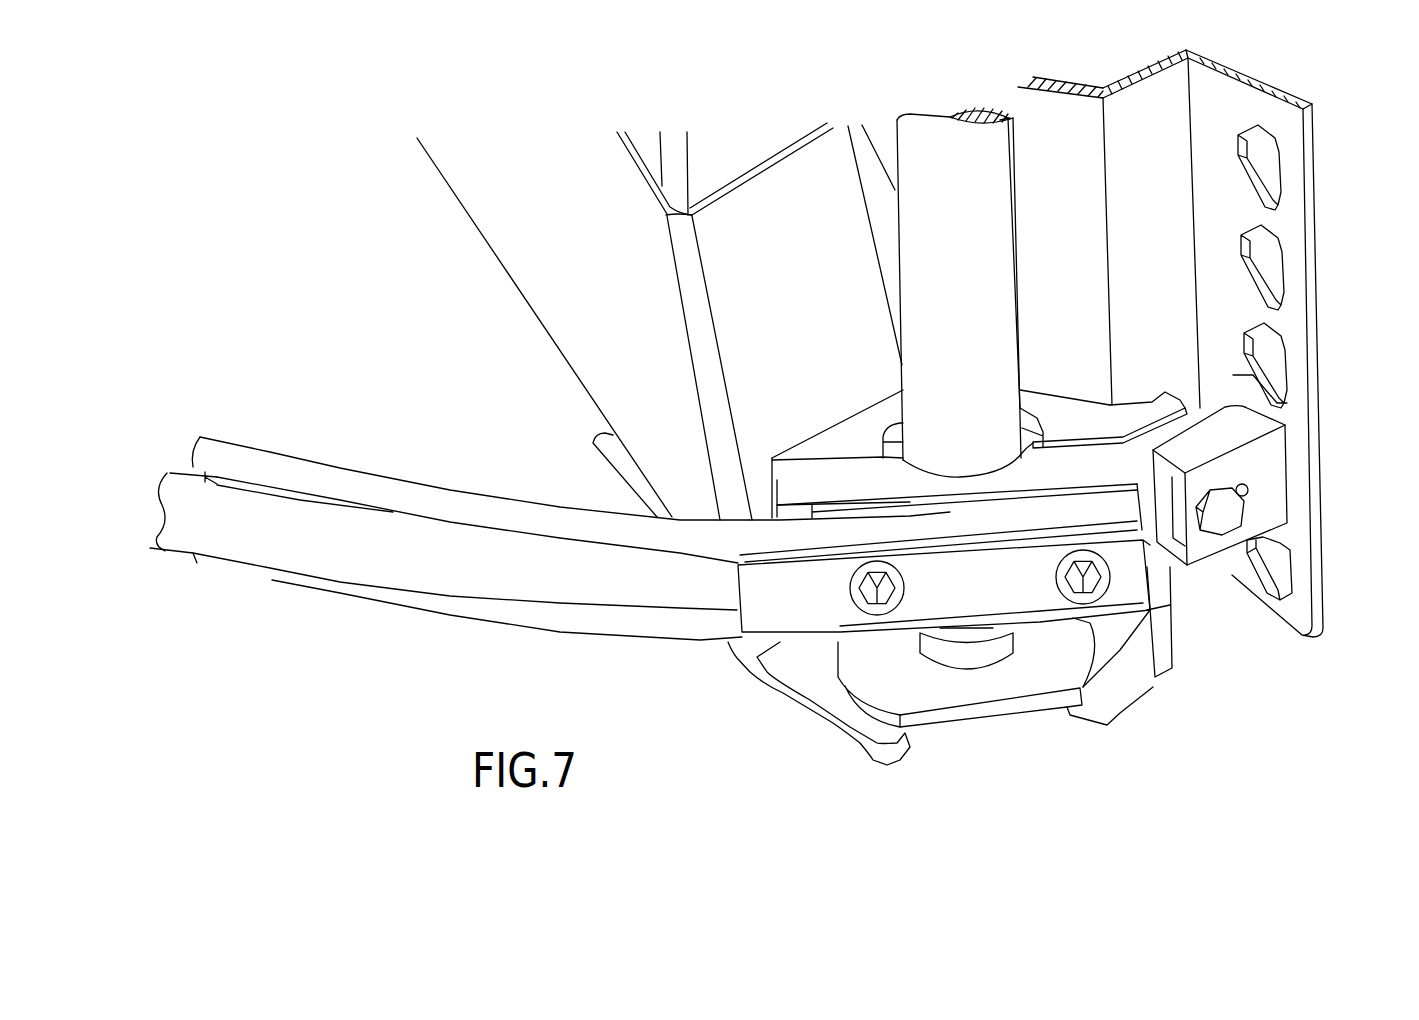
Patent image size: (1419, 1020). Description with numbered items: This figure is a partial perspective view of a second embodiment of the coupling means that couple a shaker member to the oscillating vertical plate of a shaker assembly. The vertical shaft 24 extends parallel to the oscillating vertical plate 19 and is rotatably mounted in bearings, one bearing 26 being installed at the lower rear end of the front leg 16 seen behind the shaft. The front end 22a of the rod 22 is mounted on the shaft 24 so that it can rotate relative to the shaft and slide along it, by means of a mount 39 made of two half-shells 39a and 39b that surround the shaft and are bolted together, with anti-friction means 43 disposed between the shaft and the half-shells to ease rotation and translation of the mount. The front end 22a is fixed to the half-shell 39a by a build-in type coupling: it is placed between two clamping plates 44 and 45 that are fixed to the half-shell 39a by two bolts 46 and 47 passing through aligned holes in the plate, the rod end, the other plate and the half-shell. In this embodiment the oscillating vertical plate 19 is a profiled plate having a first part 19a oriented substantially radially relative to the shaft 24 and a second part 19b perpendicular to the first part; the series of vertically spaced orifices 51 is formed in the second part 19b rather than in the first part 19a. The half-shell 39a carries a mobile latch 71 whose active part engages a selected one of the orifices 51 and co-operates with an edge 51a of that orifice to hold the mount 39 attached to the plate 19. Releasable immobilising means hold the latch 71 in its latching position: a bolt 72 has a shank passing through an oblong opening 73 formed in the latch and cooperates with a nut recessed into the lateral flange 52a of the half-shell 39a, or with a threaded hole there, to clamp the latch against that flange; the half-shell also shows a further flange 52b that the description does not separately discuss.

The front leg 16 is at (725, 140).
The vertical shaft 24 is at (947, 140).
The rod 22 is at (297, 571).
The front end of the rod 22a is at (713, 587).
The clamping plate 45 is at (545, 612).
The mount 39 is at (883, 424).
The half-shell 39a is at (787, 483).
The half-shell 39b is at (857, 422).
The anti-friction means 43 is at (892, 423).
The lateral flange 52a is at (1225, 405).
The plate portion 52b is at (1153, 405).
The oscillating vertical plate 19 is at (1198, 341).
The first part of the oscillating vertical plate 19a is at (1140, 102).
The second part of the oscillating vertical plate 19b is at (1240, 100).
The orifices 51 is at (1273, 340).
The edge of the selected orifice 51a is at (1293, 480).
The mobile latch 71 is at (1268, 537).
The bolt 72 is at (1218, 527).
The oblong opening 73 is at (1250, 502).
The clamping plate 44 is at (800, 607).
The bolt 47 is at (877, 603).
The bolt 46 is at (1090, 592).
The bearing 26 is at (973, 665).